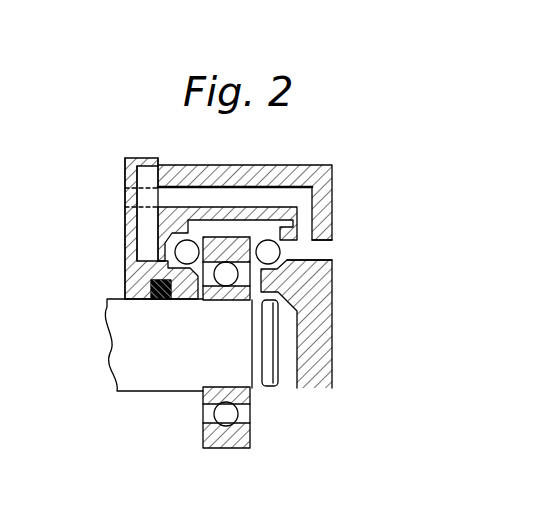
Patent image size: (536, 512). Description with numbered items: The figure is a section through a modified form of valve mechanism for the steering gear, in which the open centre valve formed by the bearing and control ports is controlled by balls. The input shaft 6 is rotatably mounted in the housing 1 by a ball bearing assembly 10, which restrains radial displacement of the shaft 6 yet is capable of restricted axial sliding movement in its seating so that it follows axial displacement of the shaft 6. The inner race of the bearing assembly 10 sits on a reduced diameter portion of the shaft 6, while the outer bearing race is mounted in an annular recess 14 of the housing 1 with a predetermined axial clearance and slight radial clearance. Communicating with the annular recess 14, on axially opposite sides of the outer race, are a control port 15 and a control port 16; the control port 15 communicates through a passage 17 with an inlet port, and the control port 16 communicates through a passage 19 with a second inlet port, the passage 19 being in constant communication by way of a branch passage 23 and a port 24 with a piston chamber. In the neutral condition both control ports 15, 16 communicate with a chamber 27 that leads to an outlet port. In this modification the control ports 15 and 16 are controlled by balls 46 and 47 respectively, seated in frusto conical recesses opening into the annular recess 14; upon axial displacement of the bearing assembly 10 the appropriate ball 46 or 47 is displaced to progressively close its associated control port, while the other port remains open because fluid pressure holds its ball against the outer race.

The housing 1 is at (314, 331).
The input shaft 6 is at (123, 310).
The ball bearing assembly 10 is at (181, 373).
The annular recess 14 is at (242, 192).
The control port 15 is at (137, 255).
The control port 16 is at (330, 267).
The passage 17 is at (130, 225).
The passage 19 is at (336, 245).
The branch passage 23 is at (210, 193).
The port 24 is at (123, 208).
The chamber 27 is at (287, 363).
The ball 46 is at (187, 250).
The ball 47 is at (283, 238).